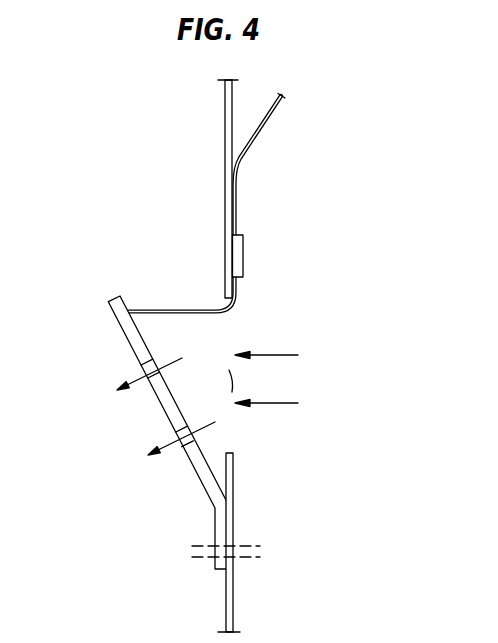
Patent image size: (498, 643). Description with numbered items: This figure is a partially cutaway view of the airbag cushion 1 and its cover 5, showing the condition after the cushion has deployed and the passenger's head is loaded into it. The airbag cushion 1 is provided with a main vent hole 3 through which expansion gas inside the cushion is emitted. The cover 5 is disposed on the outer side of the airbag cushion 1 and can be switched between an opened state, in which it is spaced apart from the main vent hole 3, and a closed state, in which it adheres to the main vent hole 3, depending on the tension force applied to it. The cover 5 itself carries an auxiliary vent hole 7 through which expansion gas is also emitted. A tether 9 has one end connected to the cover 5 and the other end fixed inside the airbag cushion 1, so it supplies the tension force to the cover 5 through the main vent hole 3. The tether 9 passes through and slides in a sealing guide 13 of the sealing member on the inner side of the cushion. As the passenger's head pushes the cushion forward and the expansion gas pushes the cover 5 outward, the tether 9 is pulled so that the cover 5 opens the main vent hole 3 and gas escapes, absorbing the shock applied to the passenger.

The airbag cushion 1 is at (223, 108).
The main vent hole 3 is at (235, 380).
The cover 5 is at (198, 472).
The auxiliary vent hole 7 is at (182, 433).
The tether 9 is at (272, 118).
The sealing guide 13 is at (243, 253).